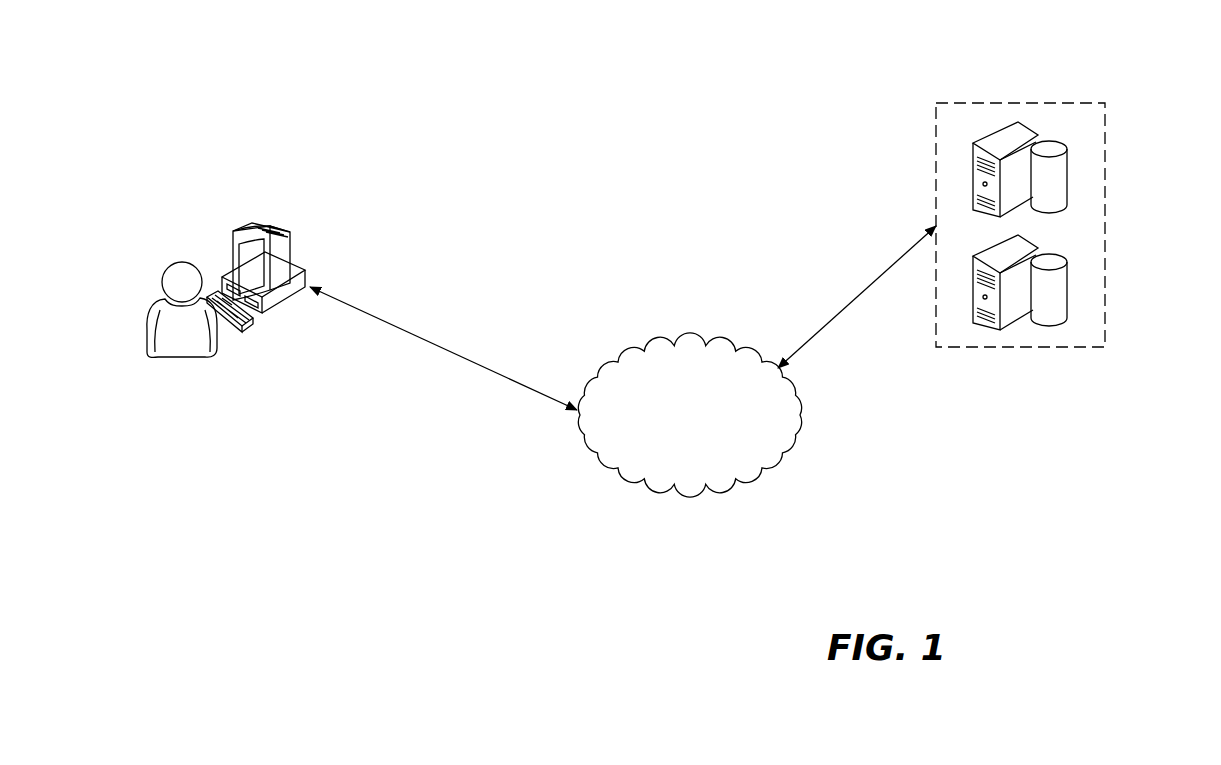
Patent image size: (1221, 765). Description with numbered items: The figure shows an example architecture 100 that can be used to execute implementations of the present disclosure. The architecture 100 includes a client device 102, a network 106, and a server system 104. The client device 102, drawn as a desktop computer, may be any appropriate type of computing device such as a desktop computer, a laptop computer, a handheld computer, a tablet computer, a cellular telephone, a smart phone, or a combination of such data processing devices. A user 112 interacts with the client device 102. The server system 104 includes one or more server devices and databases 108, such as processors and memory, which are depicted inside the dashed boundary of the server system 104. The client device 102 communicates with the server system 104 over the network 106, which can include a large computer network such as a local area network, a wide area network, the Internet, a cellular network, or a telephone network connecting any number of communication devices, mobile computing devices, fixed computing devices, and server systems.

The example architecture 100 is at (540, 100).
The client device 102 is at (233, 238).
The server system 104 is at (1105, 226).
The network 106 is at (695, 343).
The server devices and databases 108 is at (973, 165).
The user 112 is at (185, 358).